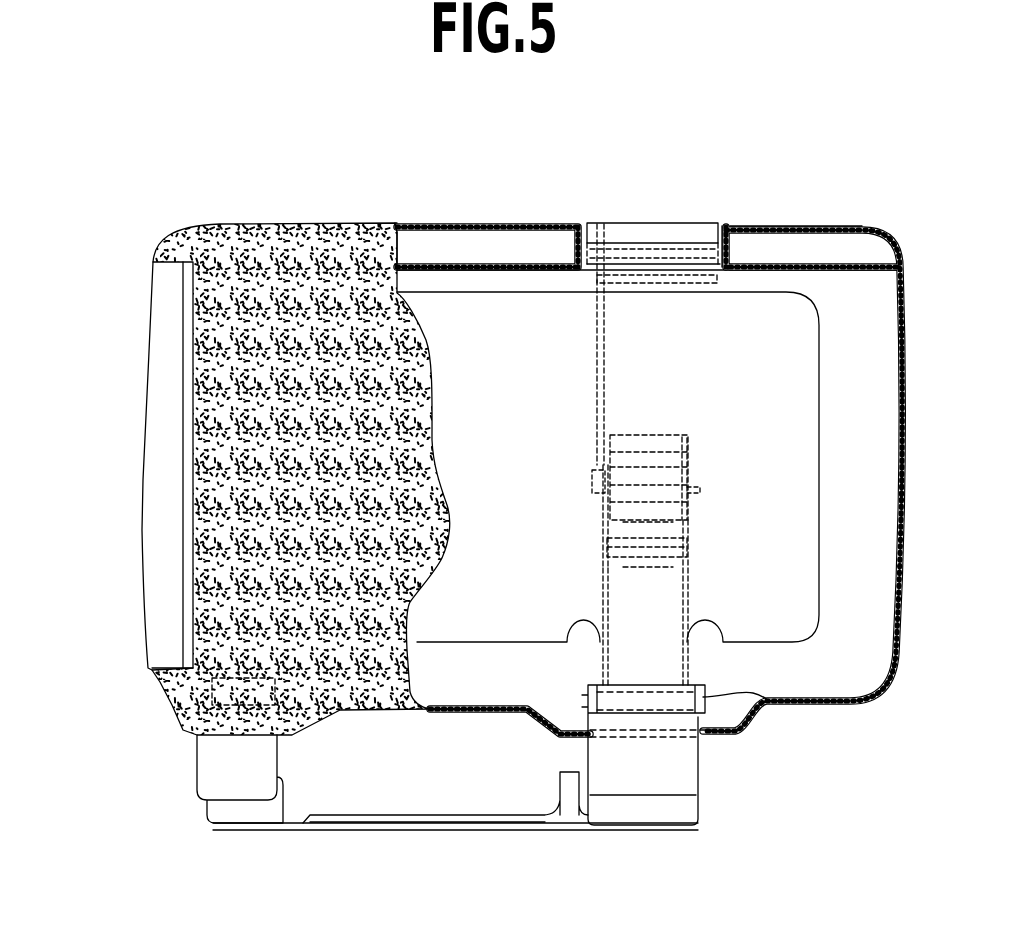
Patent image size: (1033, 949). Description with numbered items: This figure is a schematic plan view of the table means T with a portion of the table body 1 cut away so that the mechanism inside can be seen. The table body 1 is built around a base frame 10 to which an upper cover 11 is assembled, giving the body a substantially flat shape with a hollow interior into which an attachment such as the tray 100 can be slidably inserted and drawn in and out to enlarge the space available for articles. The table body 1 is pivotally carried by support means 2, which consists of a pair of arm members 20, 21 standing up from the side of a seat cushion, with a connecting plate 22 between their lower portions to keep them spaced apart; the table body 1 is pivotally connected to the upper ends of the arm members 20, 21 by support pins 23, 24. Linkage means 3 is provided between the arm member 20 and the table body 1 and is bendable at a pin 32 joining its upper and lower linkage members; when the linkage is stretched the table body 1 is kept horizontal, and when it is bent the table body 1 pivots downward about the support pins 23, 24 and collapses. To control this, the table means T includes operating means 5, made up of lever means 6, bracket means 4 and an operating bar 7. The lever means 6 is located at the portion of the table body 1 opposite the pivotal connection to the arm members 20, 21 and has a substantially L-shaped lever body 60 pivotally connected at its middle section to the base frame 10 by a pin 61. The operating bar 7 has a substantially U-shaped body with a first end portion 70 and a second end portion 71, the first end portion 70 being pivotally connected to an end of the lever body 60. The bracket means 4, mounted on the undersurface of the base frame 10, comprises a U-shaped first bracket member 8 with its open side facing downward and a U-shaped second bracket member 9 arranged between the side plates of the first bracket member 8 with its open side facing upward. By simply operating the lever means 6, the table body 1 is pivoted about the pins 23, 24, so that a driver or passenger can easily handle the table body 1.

The table body 1 is at (458, 216).
The support means 2 is at (632, 838).
The linkage means 3 is at (682, 527).
The bracket means 4 is at (693, 429).
The operating means 5 is at (591, 509).
The lever means 6 is at (661, 208).
The operating bar 7 is at (587, 388).
The first bracket member 8 is at (698, 463).
The second bracket member 9 is at (590, 475).
The base frame 10 is at (767, 320).
The upper cover 11 is at (344, 235).
The arm member 20 is at (687, 767).
The arm member 21 is at (243, 790).
The connecting plate 22 is at (433, 830).
The support pin 23 is at (768, 704).
The support pin 24 is at (170, 722).
The pin 32 is at (693, 556).
The lever body 60 is at (685, 222).
The pin 61 is at (612, 218).
The first end portion 70 is at (650, 298).
The second end portion 71 is at (702, 490).
The tray 100 is at (150, 528).
The table means T is at (878, 223).